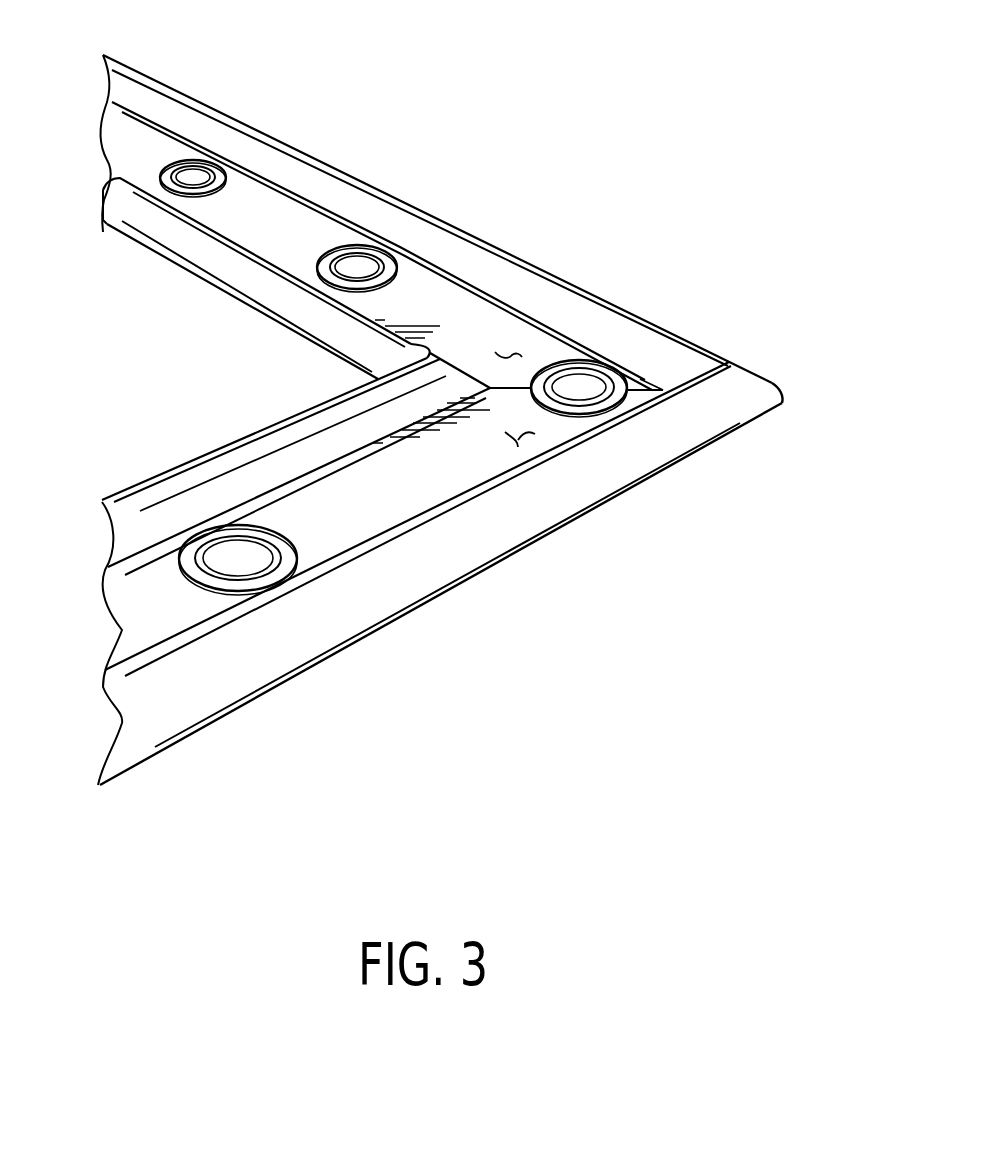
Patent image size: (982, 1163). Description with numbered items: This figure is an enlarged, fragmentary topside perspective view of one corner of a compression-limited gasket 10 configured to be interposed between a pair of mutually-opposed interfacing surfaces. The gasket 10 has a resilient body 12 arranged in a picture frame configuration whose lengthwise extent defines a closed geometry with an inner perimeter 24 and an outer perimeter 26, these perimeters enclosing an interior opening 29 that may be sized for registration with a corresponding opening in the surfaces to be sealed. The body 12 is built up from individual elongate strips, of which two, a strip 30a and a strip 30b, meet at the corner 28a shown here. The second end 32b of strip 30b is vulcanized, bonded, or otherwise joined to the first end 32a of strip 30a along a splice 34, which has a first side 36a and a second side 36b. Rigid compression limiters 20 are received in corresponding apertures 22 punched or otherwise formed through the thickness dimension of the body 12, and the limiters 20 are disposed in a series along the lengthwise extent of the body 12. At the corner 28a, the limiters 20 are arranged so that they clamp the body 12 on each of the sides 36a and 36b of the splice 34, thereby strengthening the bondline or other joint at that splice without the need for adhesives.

The gasket 10 is at (663, 158).
The resilient body 12 is at (680, 466).
The compression limiters 20 is at (245, 170).
The apertures 22 is at (160, 175).
The inner perimeter 24 is at (142, 246).
The outer perimeter 26 is at (183, 95).
The corner 28a is at (782, 403).
The interior opening 29 is at (160, 424).
The elongate strip 30a is at (503, 350).
The elongate strip 30b is at (428, 624).
The first end 32a is at (757, 373).
The second end 32b is at (410, 352).
The splice 34 is at (717, 353).
The first side 36a is at (562, 366).
The second side 36b is at (518, 447).